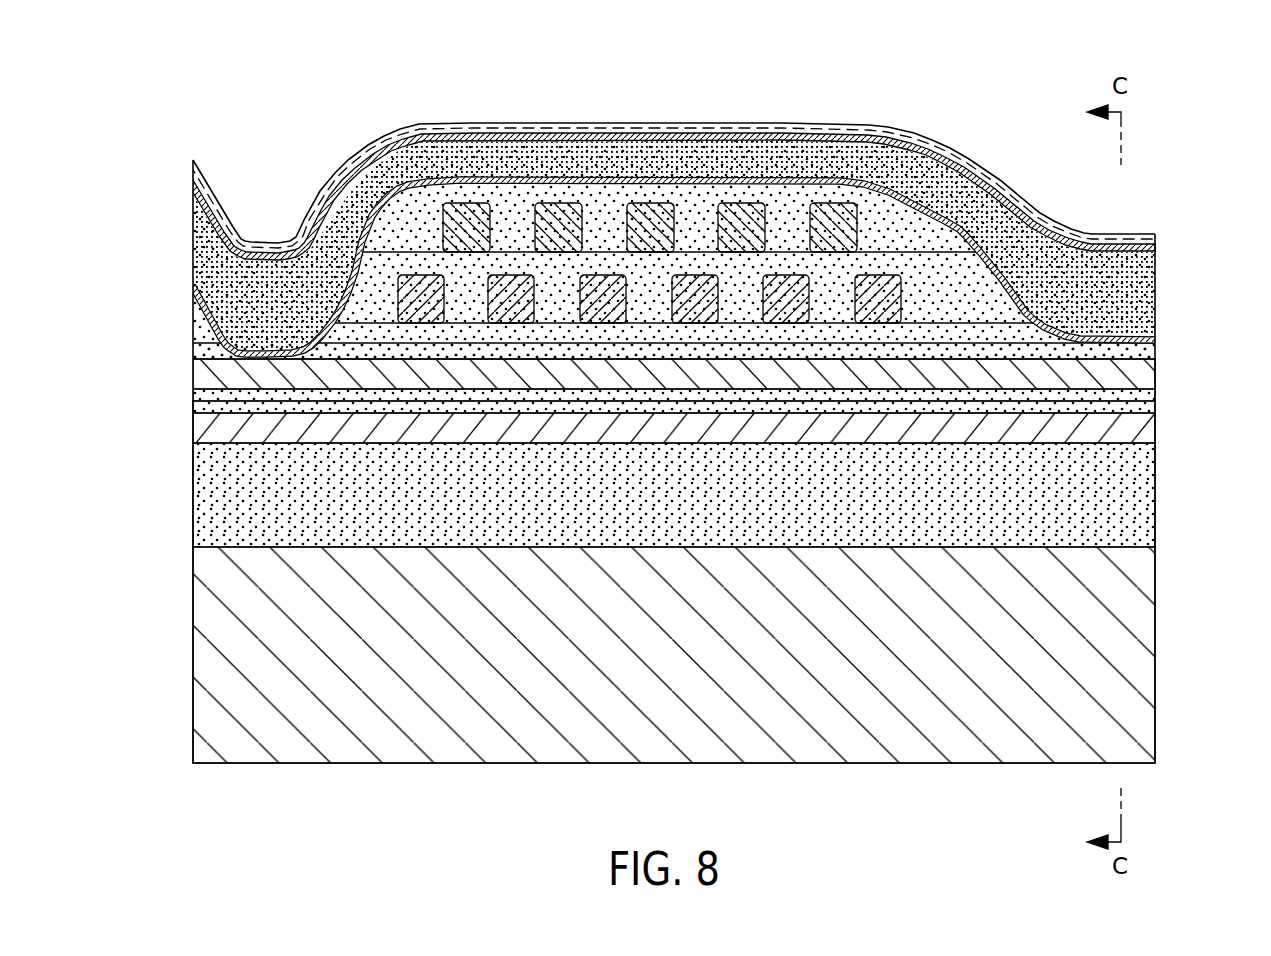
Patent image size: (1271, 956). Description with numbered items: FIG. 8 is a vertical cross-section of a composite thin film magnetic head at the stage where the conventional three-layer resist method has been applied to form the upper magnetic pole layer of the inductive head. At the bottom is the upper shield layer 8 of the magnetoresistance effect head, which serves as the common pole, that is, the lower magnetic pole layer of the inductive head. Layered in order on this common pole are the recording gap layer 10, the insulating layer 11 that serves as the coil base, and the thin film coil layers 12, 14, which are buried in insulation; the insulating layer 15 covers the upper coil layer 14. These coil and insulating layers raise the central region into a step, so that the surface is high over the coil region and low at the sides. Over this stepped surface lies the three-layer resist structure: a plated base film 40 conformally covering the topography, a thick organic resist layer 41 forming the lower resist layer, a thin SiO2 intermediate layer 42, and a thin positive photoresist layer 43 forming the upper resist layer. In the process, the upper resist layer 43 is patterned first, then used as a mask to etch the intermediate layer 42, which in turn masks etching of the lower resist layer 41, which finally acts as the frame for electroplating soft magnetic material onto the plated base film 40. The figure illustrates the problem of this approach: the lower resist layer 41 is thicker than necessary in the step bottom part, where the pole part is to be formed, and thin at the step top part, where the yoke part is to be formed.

The upper shield layer 8 is at (1157, 372).
The recording gap layer 10 is at (1157, 350).
The insulating layer 11 is at (930, 280).
The thin film coil layer 12 is at (610, 290).
The thin film coil layer 14 is at (472, 222).
The insulating layer 15 is at (402, 230).
The plated base film 40 is at (1157, 338).
The thick organic resist layer 41 is at (1157, 292).
The thin SiO2 intermediate layer 42 is at (1157, 247).
The thin positive photoresist layer 43 is at (1157, 240).